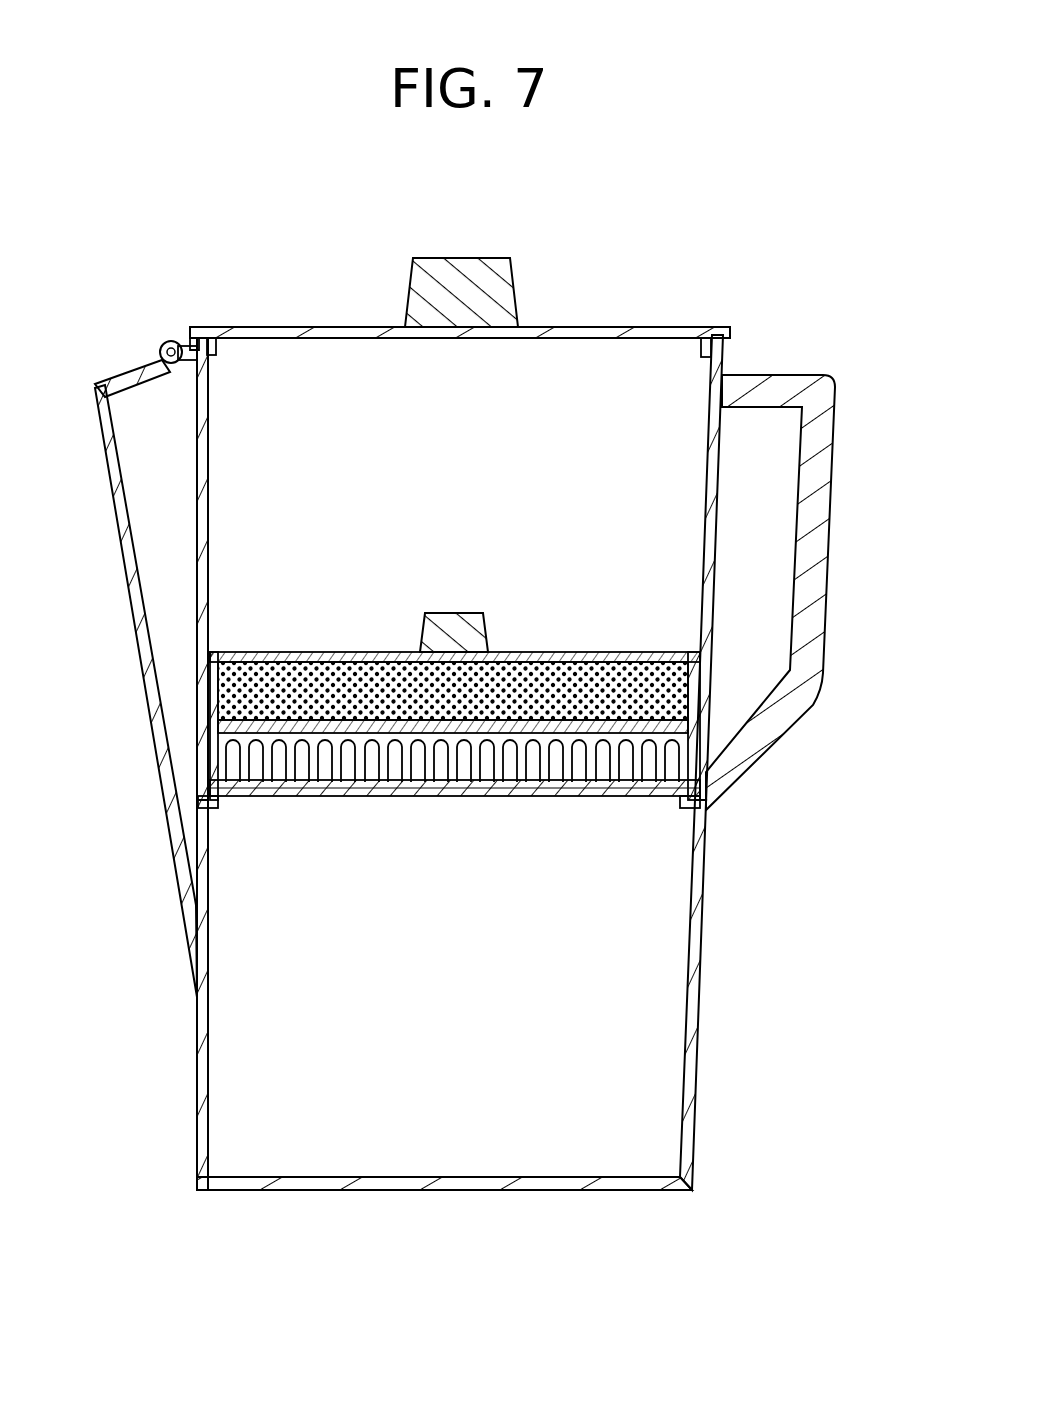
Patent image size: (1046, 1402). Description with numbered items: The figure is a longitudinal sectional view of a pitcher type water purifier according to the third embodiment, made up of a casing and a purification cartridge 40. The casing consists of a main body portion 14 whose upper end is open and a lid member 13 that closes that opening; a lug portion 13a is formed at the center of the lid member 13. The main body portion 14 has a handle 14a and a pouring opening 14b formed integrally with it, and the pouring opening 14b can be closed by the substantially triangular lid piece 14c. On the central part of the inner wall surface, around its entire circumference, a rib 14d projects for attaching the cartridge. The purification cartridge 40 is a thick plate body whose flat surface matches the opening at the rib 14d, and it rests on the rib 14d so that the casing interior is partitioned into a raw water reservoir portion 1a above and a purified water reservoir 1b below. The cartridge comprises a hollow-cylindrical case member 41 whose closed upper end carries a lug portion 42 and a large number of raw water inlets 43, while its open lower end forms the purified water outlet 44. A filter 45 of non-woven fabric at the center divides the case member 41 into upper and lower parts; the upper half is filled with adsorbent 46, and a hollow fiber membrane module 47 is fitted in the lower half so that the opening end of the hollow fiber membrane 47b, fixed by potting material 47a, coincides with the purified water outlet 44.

The raw water reservoir portion 1a is at (617, 372).
The purified water reservoir 1b is at (650, 993).
The lid member 13 is at (702, 328).
The lug portion 13a is at (455, 257).
The main body portion 14 is at (840, 404).
The handle 14a is at (818, 567).
The pouring opening 14b is at (133, 602).
The lid piece 14c is at (150, 348).
The rib 14d is at (678, 808).
The purification cartridge 40 is at (335, 830).
The case member 41 is at (690, 693).
The lug portion 42 is at (460, 612).
The raw water inlets 43 is at (556, 655).
The purified water outlet 44 is at (258, 800).
The filter 45 is at (267, 715).
The adsorbent 46 is at (347, 677).
The hollow fiber membrane module 47 is at (545, 868).
The potting material 47a is at (468, 792).
The hollow fiber membrane 47b is at (512, 792).